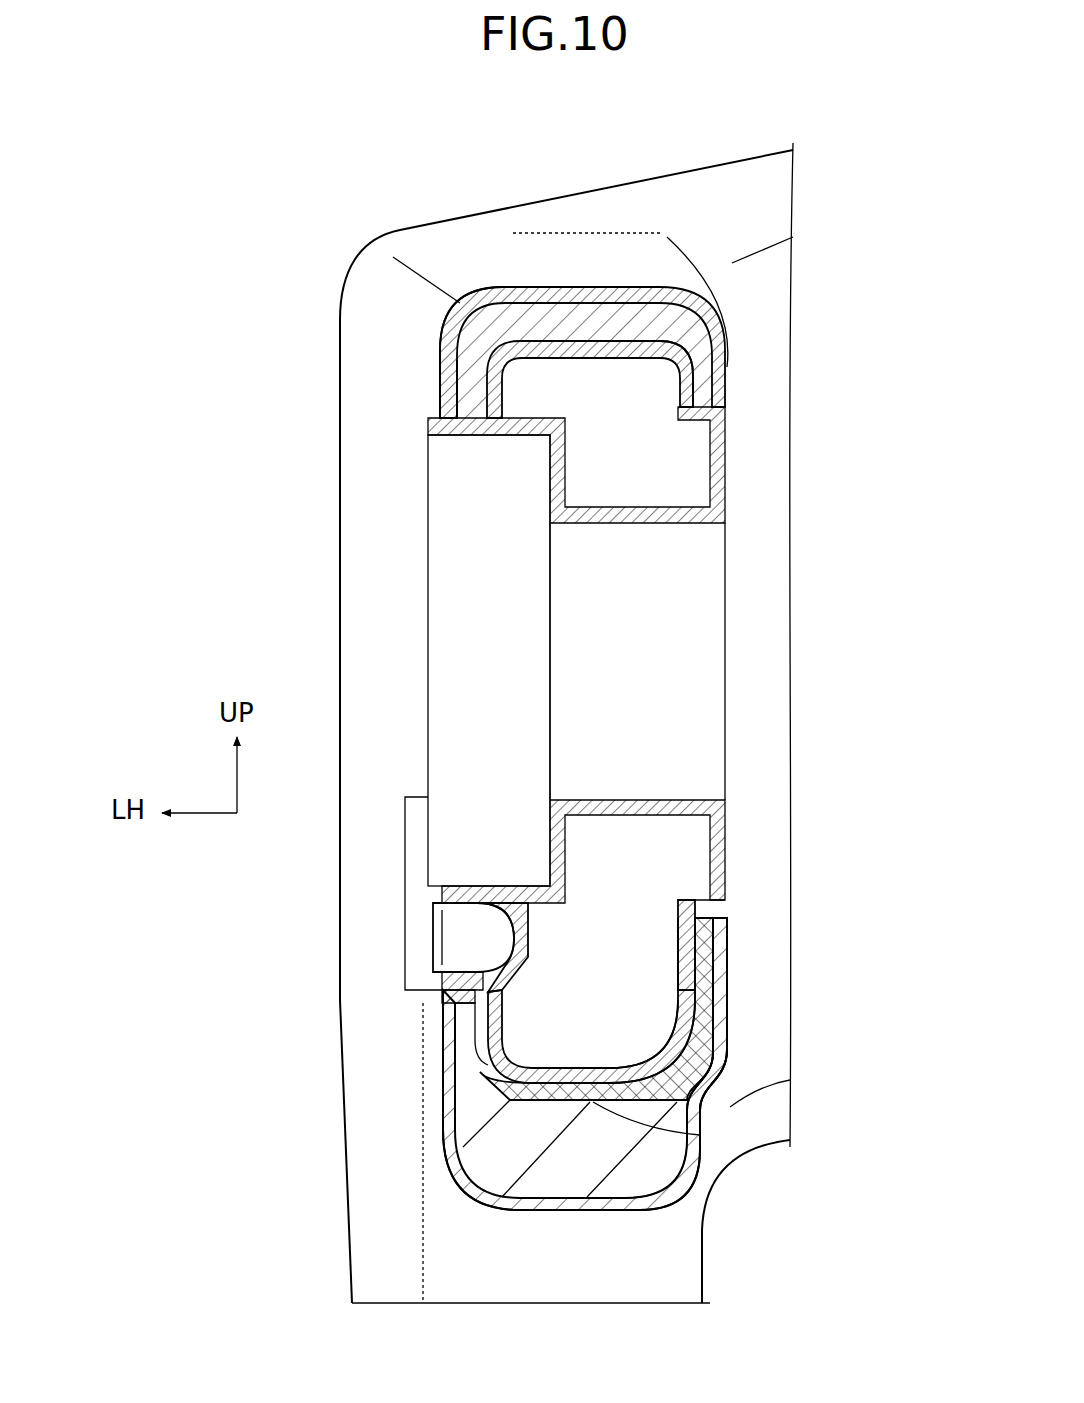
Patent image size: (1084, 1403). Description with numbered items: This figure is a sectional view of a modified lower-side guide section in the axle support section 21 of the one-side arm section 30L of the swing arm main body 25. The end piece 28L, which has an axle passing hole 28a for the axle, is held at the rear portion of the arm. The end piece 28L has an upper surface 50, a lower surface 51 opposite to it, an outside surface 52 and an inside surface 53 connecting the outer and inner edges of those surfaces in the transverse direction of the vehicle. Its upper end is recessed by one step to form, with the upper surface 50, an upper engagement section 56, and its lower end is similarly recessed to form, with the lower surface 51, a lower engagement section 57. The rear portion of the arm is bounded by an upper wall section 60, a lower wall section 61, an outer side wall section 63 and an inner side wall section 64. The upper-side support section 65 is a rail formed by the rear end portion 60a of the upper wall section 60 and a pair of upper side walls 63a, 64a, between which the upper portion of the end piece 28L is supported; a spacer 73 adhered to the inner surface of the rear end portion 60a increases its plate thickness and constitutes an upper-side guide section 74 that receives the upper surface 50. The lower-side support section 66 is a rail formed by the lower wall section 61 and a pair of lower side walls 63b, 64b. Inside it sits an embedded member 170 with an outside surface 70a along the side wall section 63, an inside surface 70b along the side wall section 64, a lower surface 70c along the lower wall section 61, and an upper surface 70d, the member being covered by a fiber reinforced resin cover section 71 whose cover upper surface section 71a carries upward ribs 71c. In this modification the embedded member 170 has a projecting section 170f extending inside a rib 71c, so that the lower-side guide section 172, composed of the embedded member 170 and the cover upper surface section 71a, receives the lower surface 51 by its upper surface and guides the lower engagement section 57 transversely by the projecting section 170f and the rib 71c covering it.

The axle support section 21 is at (755, 480).
The swing arm main body 25 is at (318, 639).
The end piece 28L is at (715, 336).
The axle passing hole 28a is at (660, 597).
The one-side arm section 30L is at (330, 550).
The upper surface 50 is at (533, 295).
The lower surface 51 is at (590, 1132).
The outside surface 52 is at (477, 1023).
The inside surface 53 is at (573, 1053).
The upper engagement section 56 is at (495, 352).
The lower engagement section 57 is at (493, 1040).
The upper wall section 60 is at (547, 257).
The rear end portion of the upper wall section 60a is at (612, 368).
The lower wall section 61 is at (607, 1212).
The side wall section 63 is at (453, 1080).
The upper side wall 63a is at (440, 385).
The lower side wall 63b is at (443, 1015).
The side wall section 64 is at (727, 1028).
The upper side wall 64a is at (710, 380).
The lower side wall 64b is at (727, 960).
The upper-side support section 65 is at (578, 278).
The lower-side support section 66 is at (580, 1220).
The outside surface 70a is at (473, 1170).
The inside surface 70b is at (705, 1175).
The lower surface 70c is at (625, 1212).
The upper surface 70d is at (699, 1078).
The cover section 71 is at (478, 1102).
The cover upper surface section 71a is at (600, 1012).
The rib 71c is at (443, 967).
The spacer 73 is at (693, 342).
The upper-side guide section 74 is at (613, 352).
The embedded member 170 is at (512, 1213).
The projecting section 170f is at (467, 1057).
The lower-side guide section 172 is at (555, 1068).